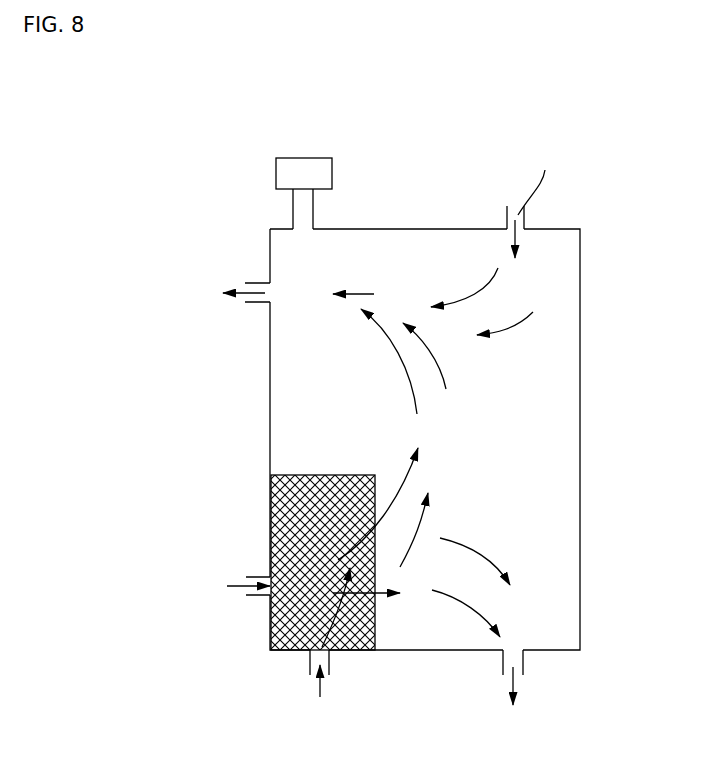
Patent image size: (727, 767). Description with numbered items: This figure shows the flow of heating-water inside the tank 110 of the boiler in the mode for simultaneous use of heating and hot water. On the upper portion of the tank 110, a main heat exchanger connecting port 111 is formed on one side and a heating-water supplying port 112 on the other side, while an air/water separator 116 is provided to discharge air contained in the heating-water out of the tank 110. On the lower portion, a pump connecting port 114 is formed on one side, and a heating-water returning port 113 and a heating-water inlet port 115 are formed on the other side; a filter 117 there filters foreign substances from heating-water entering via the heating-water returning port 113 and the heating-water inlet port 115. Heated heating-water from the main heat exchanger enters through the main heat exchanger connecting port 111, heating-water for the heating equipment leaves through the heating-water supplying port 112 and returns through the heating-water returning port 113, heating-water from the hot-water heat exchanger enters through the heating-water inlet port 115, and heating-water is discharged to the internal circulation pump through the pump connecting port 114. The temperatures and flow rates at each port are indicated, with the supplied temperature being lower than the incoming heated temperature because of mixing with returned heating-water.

The tank 110 is at (203, 157).
The main heat exchanger connecting port 111 is at (527, 215).
The heating-water supplying port 112 is at (259, 305).
The heating-water returning port 113 is at (257, 577).
The pump connecting port 114 is at (503, 662).
The heating-water inlet port 115 is at (310, 662).
The air/water separator 116 is at (300, 165).
The filter 117 is at (283, 617).